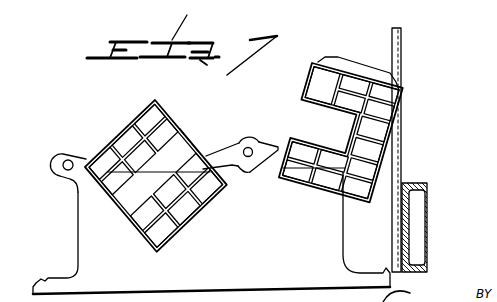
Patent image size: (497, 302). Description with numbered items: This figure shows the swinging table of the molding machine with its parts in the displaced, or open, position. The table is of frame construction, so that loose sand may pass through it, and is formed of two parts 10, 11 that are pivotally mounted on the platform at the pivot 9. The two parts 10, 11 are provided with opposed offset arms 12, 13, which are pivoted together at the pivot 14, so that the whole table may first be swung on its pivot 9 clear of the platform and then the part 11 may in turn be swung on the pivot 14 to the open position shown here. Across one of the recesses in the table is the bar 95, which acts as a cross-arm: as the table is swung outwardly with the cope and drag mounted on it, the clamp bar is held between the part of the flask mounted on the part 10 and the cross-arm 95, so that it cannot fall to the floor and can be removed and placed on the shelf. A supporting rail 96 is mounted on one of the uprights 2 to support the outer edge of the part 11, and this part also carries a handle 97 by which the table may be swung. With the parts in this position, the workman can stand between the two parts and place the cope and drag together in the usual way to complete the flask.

The upright 2 is at (421, 184).
The pivot 9 is at (72, 159).
The table part 10 is at (171, 115).
The table part 11 is at (311, 62).
The offset arm 12 is at (233, 149).
The offset arm 13 is at (272, 152).
The pivot 14 is at (252, 142).
The bar 95 is at (193, 134).
The supporting rail 96 is at (403, 50).
The handle 97 is at (342, 59).